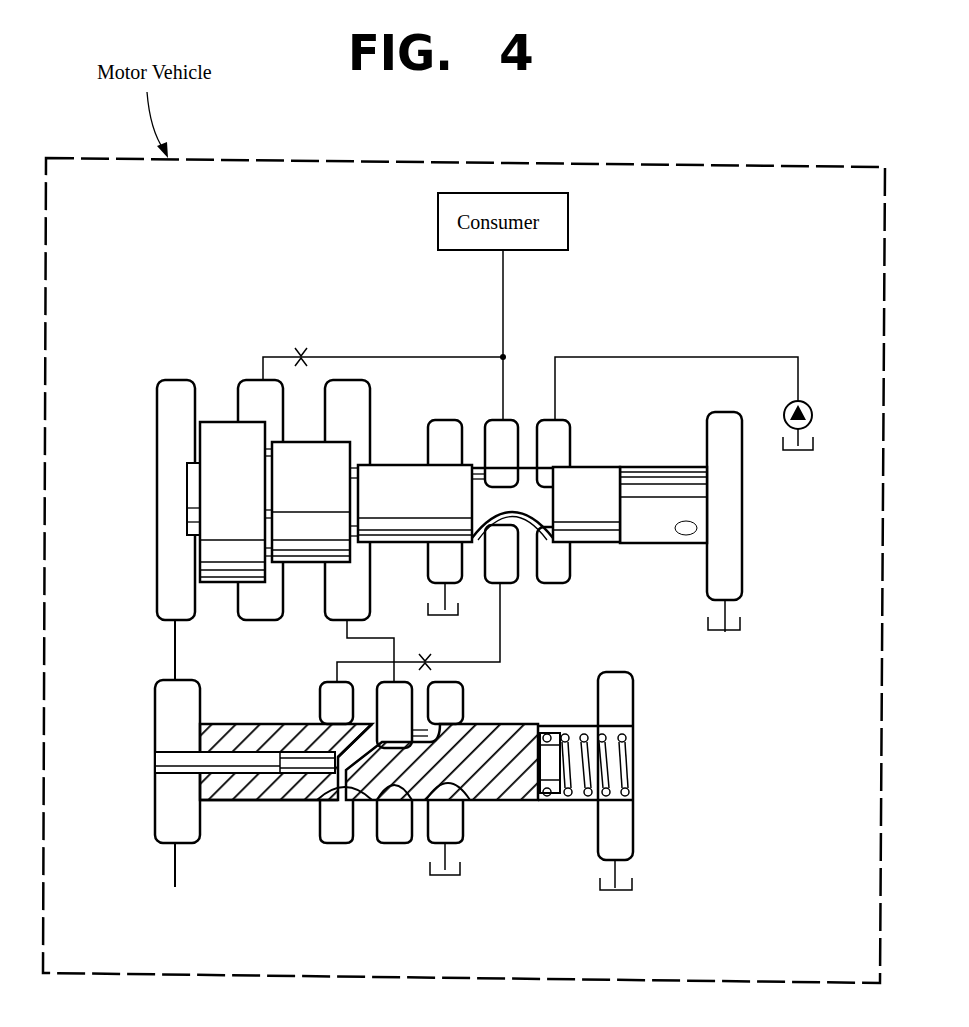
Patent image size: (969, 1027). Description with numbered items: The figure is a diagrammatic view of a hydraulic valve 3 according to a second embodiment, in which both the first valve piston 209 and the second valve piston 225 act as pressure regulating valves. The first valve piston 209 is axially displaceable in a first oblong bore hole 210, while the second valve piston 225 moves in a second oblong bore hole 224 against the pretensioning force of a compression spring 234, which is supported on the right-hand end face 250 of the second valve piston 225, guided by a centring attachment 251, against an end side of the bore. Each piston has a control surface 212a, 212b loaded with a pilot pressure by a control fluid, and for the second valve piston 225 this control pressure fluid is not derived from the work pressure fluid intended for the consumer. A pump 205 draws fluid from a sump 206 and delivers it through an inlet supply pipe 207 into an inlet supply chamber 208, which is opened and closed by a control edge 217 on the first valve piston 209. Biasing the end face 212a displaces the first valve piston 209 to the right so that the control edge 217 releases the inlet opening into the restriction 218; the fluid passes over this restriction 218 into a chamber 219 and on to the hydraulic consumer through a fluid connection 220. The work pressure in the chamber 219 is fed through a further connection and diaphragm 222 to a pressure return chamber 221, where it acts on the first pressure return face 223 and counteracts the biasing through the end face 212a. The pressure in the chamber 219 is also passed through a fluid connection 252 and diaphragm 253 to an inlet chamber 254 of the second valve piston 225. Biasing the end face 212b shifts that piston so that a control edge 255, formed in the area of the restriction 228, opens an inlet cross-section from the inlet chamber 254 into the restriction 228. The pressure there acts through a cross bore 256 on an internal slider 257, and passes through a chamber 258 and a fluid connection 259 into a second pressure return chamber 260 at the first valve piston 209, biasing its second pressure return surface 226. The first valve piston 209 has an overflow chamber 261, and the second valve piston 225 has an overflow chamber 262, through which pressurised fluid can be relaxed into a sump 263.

The hydraulic valve 3 is at (134, 662).
The pump 205 is at (812, 418).
The sump 206 is at (803, 452).
The inlet supply pipe 207 is at (735, 357).
The inlet supply chamber 208 is at (555, 570).
The first valve piston 209 is at (586, 504).
The first oblong bore hole 210 is at (600, 467).
The control surface (end face) of the first valve piston 212a is at (200, 553).
The control surface (end face) of the second valve piston 212b is at (200, 785).
The control edge 217 is at (553, 464).
The restriction 218 is at (525, 533).
The chamber 219 is at (508, 432).
The fluid connection 220 is at (508, 366).
The pressure return chamber 221 is at (252, 392).
The diaphragm 222 is at (302, 348).
The first pressure return face 223 is at (272, 426).
The second oblong bore hole 224 is at (478, 727).
The second valve piston 225 is at (252, 788).
The second pressure return surface 226 is at (362, 450).
The restriction 228 is at (370, 790).
The compression spring 234 is at (633, 792).
The end face 250 is at (552, 789).
The centring attachment 251 is at (553, 748).
The fluid connection 252 is at (502, 650).
The diaphragm 253 is at (420, 648).
The inlet chamber 254 is at (332, 832).
The control edge 255 is at (300, 790).
The cross bore 256 is at (347, 745).
The internal slider 257 is at (297, 762).
The chamber 258 is at (395, 830).
The fluid connection 259 is at (370, 641).
The second pressure return chamber 260 is at (360, 590).
The overflow chamber 261 is at (442, 432).
The overflow chamber 262 is at (460, 832).
The sump 263 is at (448, 618).